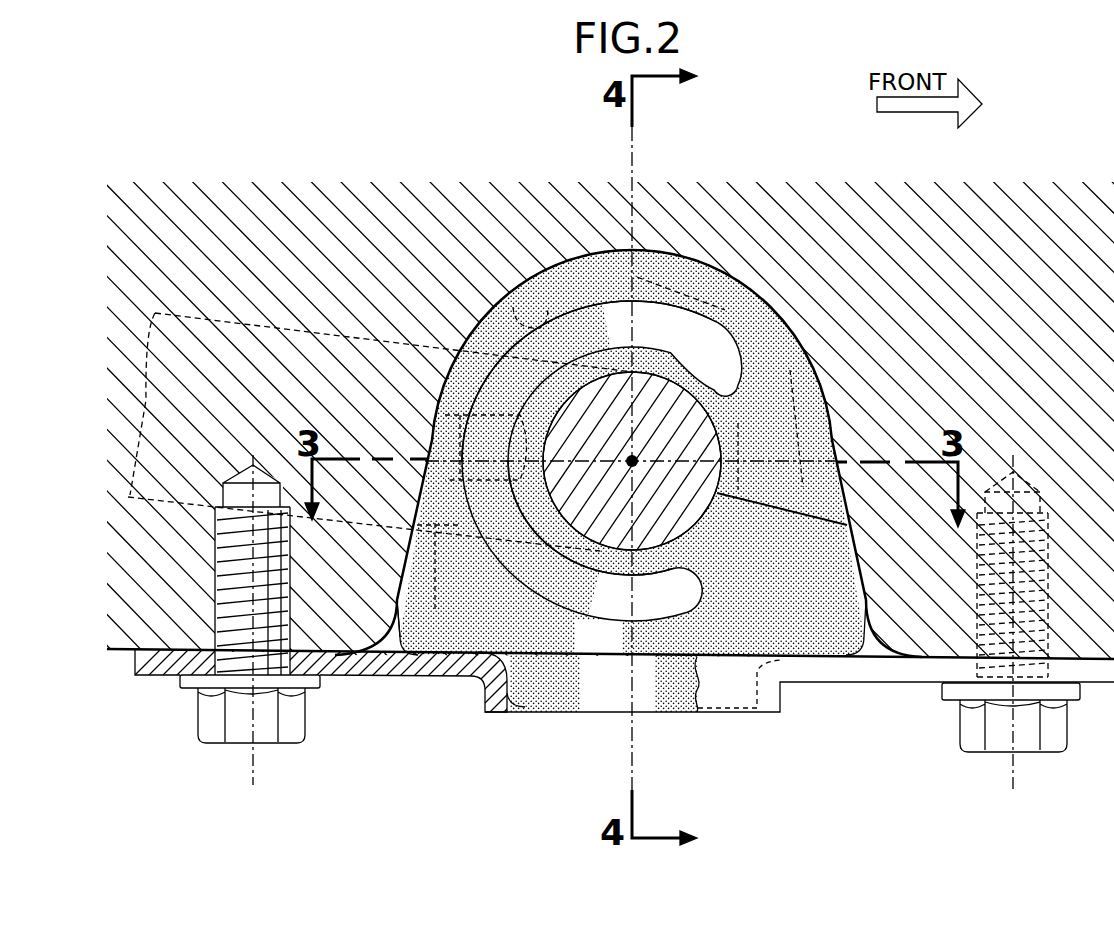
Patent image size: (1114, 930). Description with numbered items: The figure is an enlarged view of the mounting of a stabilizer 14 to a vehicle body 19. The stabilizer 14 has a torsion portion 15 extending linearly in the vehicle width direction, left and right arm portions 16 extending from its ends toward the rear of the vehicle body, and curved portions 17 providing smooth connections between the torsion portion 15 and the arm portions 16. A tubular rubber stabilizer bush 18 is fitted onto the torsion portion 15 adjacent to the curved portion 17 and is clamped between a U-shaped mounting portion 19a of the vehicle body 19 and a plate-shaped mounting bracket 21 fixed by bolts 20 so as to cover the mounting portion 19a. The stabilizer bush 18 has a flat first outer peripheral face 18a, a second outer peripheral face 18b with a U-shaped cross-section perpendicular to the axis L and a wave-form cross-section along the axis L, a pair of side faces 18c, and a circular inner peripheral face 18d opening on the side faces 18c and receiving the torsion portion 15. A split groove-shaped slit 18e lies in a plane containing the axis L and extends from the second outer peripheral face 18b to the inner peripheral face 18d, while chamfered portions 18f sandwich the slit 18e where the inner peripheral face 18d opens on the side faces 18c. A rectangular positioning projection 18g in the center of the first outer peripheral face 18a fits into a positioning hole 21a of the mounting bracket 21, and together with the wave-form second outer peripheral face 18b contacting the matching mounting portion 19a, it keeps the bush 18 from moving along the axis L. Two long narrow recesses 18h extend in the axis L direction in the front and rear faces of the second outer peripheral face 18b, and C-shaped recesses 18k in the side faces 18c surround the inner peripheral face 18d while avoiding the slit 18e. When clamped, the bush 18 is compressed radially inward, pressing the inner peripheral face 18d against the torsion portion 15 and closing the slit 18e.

The stabilizer 14 is at (670, 377).
The torsion portion 15 is at (645, 462).
The arm portion 16 is at (202, 317).
The curved portion 17 is at (400, 570).
The stabilizer bush 18 is at (663, 250).
The first outer peripheral face 18a is at (457, 662).
The second outer peripheral face 18b is at (580, 250).
The side face 18c is at (755, 393).
The inner peripheral face 18d is at (590, 532).
The slit 18e is at (805, 497).
The chamfered portion 18f is at (766, 464).
The positioning projection 18g is at (588, 700).
The recess 18h is at (420, 415).
The recess 18k is at (522, 325).
The vehicle body 19 is at (386, 190).
The mounting portion 19a is at (775, 322).
The bolt 20 is at (240, 736).
The mounting bracket 21 is at (848, 683).
The positioning hole 21a is at (514, 714).
The axis L is at (636, 465).